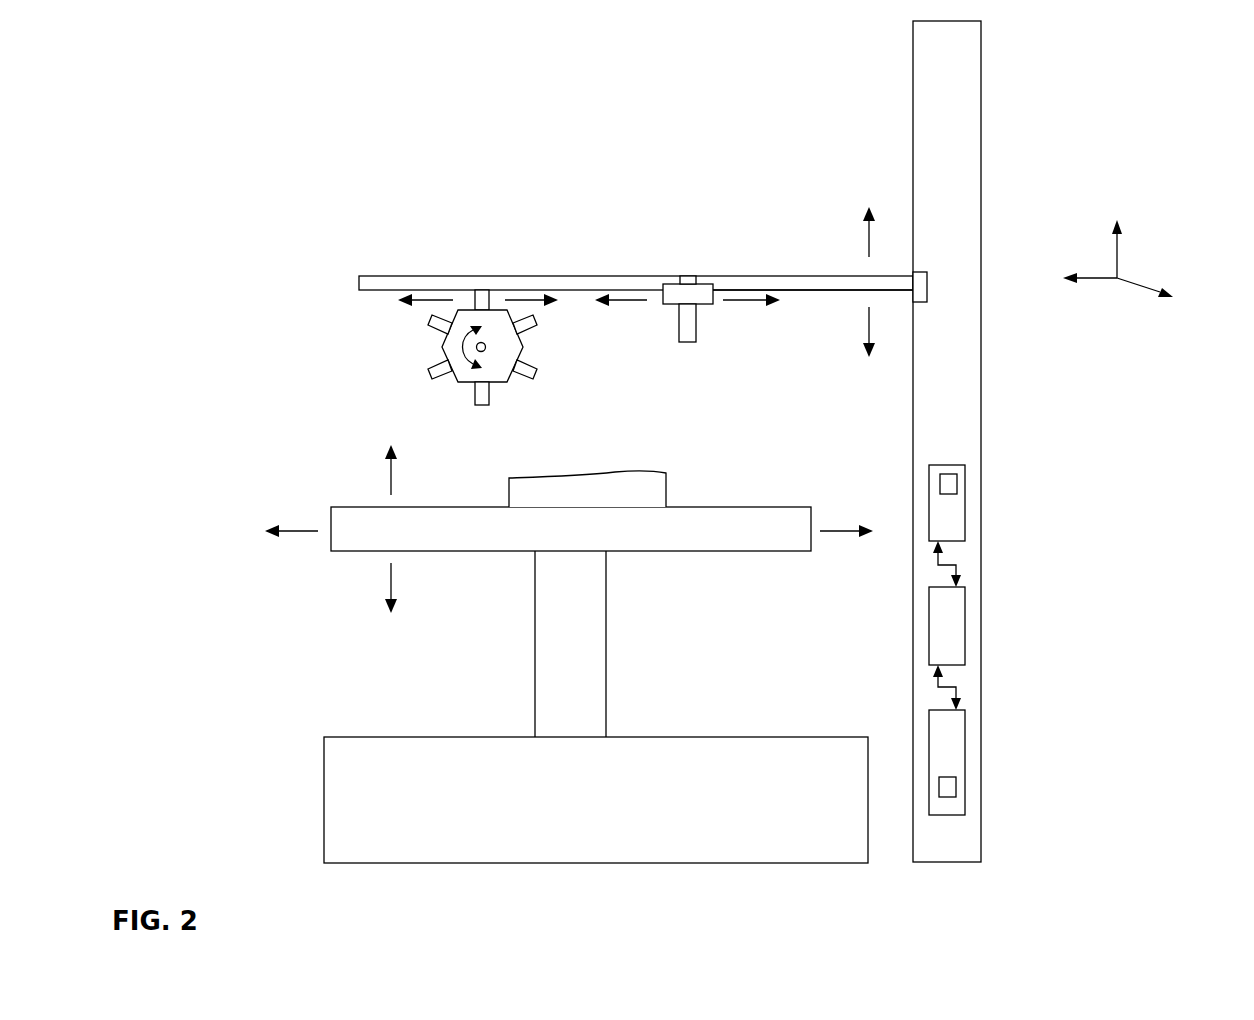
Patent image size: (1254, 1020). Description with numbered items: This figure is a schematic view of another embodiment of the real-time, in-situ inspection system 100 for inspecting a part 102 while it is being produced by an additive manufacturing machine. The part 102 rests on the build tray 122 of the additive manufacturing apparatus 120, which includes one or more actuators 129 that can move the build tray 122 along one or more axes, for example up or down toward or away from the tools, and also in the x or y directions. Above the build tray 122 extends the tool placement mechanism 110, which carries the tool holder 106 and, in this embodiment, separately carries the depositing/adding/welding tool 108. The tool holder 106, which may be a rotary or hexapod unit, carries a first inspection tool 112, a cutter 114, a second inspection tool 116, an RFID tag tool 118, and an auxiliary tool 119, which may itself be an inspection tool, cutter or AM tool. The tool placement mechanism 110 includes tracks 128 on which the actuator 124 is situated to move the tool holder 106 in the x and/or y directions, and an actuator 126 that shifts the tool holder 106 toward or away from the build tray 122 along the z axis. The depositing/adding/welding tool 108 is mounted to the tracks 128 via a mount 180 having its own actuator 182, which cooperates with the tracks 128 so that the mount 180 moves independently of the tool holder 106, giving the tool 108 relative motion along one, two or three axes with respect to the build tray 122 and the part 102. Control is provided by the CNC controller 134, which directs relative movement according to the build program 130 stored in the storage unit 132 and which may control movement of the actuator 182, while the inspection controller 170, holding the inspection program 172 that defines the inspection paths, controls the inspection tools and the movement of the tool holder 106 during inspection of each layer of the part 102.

The in-situ inspection system 100 is at (205, 167).
The part 102 is at (667, 487).
The tool holder 106 is at (440, 347).
The depositing/adding/welding tool 108 is at (688, 342).
The tool placement mechanism 110 is at (383, 276).
The first inspection tool 112 is at (484, 405).
The cutter 114 is at (537, 376).
The second inspection tool 116 is at (428, 376).
The RFID tag tool 118 is at (537, 320).
The auxiliary tool 119 is at (428, 319).
The additive manufacturing apparatus 120 is at (205, 756).
The build tray 122 is at (757, 551).
The actuator 124 is at (487, 297).
The actuator 126 is at (927, 297).
The tracks 128 is at (810, 290).
The actuator 129 is at (607, 657).
The build program 130 is at (956, 788).
The storage unit 132 is at (965, 763).
The CNC controller 134 is at (965, 622).
The inspection controller 170 is at (965, 521).
The inspection program 172 is at (957, 484).
The mount 180 is at (703, 293).
The actuator 182 is at (687, 276).